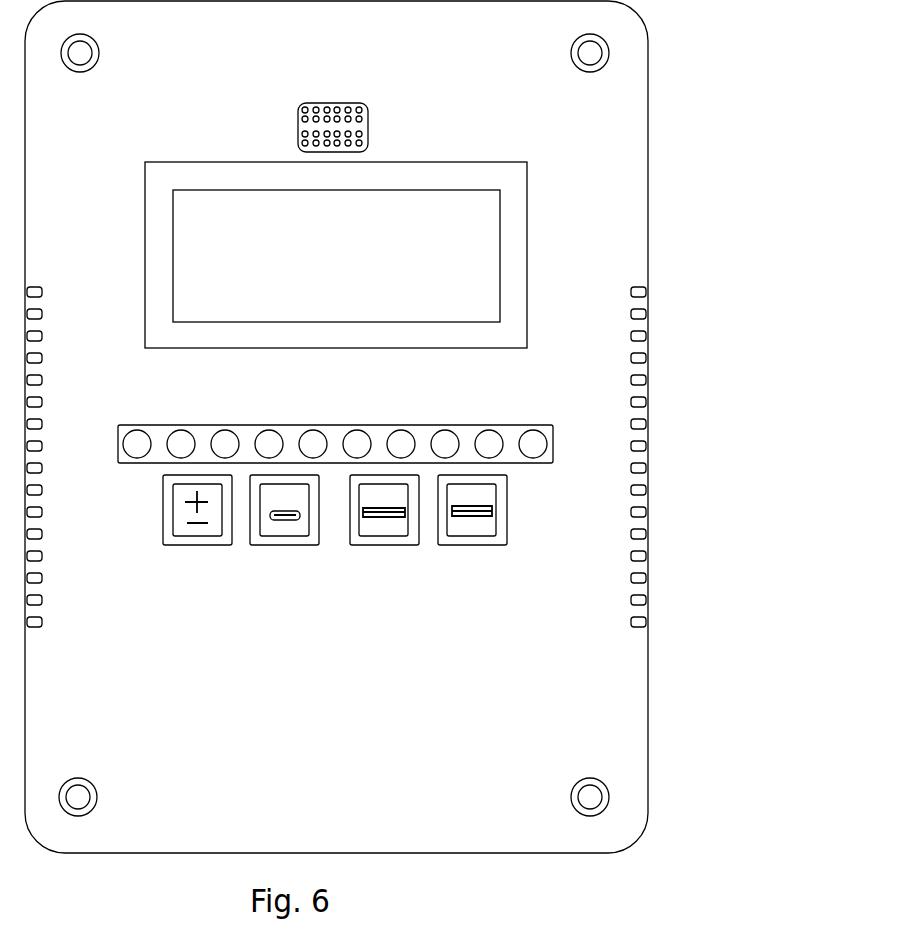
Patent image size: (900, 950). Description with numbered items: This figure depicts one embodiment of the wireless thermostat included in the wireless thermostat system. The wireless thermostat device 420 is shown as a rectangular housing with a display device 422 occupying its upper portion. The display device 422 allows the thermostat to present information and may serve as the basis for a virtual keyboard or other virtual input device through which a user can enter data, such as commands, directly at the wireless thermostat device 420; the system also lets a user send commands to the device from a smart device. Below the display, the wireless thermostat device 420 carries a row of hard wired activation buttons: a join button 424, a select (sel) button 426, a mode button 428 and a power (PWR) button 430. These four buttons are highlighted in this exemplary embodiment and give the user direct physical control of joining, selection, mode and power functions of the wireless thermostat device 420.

The wireless thermostat device 420 is at (648, 197).
The display device 422 is at (226, 162).
The join button 424 is at (187, 537).
The select (sel) button 426 is at (270, 537).
The mode button 428 is at (377, 537).
The power (PWR) button 430 is at (478, 537).